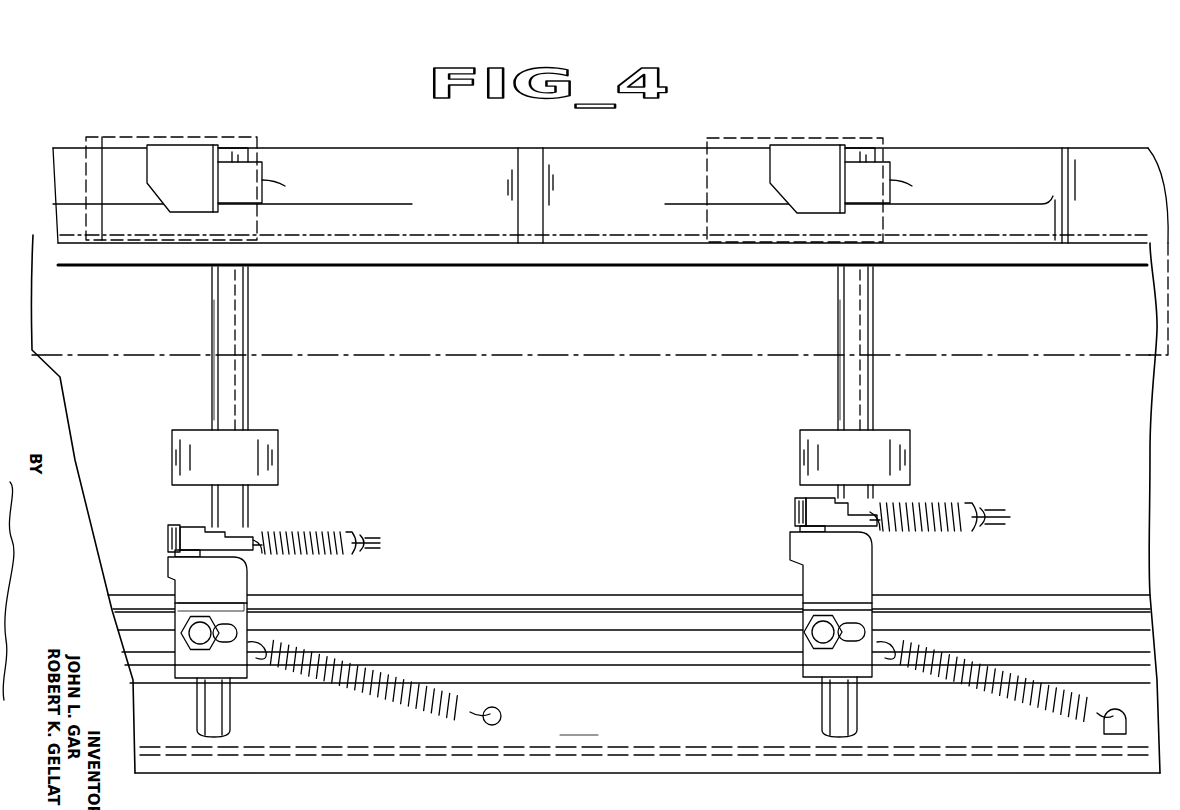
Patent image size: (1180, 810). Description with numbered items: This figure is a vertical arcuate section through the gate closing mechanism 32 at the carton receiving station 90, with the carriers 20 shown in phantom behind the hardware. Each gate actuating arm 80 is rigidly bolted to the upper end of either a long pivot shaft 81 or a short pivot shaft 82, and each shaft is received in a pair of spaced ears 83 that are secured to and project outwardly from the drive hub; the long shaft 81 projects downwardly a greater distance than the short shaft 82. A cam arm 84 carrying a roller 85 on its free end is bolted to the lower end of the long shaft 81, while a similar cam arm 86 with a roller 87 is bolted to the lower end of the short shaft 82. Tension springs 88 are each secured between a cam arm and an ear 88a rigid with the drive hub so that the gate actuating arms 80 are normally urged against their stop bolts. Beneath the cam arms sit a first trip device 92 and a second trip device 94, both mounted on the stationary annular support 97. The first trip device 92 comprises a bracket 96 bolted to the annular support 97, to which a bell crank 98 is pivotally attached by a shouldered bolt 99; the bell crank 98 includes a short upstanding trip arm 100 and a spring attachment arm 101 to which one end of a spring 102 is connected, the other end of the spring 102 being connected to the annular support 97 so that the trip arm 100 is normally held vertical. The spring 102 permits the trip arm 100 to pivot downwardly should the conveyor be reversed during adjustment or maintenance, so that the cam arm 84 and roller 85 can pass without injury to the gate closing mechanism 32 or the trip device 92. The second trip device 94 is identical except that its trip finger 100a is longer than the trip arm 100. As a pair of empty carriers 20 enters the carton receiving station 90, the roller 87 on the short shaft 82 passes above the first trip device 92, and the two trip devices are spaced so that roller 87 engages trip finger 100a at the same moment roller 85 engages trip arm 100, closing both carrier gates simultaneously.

The carriers 20 is at (115, 137).
The gate closing mechanism 32 is at (212, 382).
The gate actuating arms 80 is at (200, 184).
The long pivot shaft 81 is at (227, 313).
The short pivot shaft 82 is at (850, 322).
The ears 83 is at (243, 437).
The cam arm 84 is at (168, 530).
The roller 85 is at (175, 565).
The cam arm 86 is at (795, 508).
The roller 87 is at (795, 537).
The tension springs 88 is at (282, 535).
The ears 88a is at (366, 537).
The carton receiving station 90 is at (877, 108).
The first trip device 92 is at (177, 605).
The second trip device 94 is at (800, 598).
The bracket 96 is at (210, 668).
The annular support 97 is at (598, 734).
The bell crank 98 is at (240, 600).
The shouldered bolt 99 is at (195, 637).
The trip arm 100 is at (233, 581).
The trip finger 100a is at (867, 586).
The spring attachment arm 101 is at (262, 646).
The spring 102 is at (330, 690).